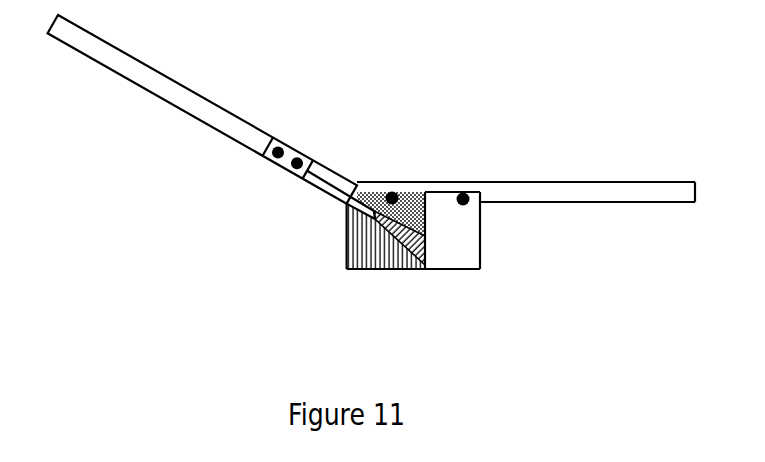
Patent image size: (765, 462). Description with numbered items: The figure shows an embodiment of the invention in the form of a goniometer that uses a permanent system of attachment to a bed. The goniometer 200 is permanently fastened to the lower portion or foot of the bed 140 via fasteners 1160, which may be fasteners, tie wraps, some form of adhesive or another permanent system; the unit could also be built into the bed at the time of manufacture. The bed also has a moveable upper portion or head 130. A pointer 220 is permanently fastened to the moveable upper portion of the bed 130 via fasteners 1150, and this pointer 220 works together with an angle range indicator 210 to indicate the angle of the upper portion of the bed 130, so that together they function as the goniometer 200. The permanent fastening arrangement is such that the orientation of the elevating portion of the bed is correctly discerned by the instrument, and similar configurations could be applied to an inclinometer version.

The moveable upper portion or head of bed 130 is at (175, 95).
The lower portion or foot of bed 140 is at (603, 192).
The goniometer 200 is at (458, 247).
The angle range indicator 210 is at (400, 243).
The pointer 220 is at (322, 189).
The fasteners 1150 is at (289, 146).
The fasteners 1160 is at (392, 192).